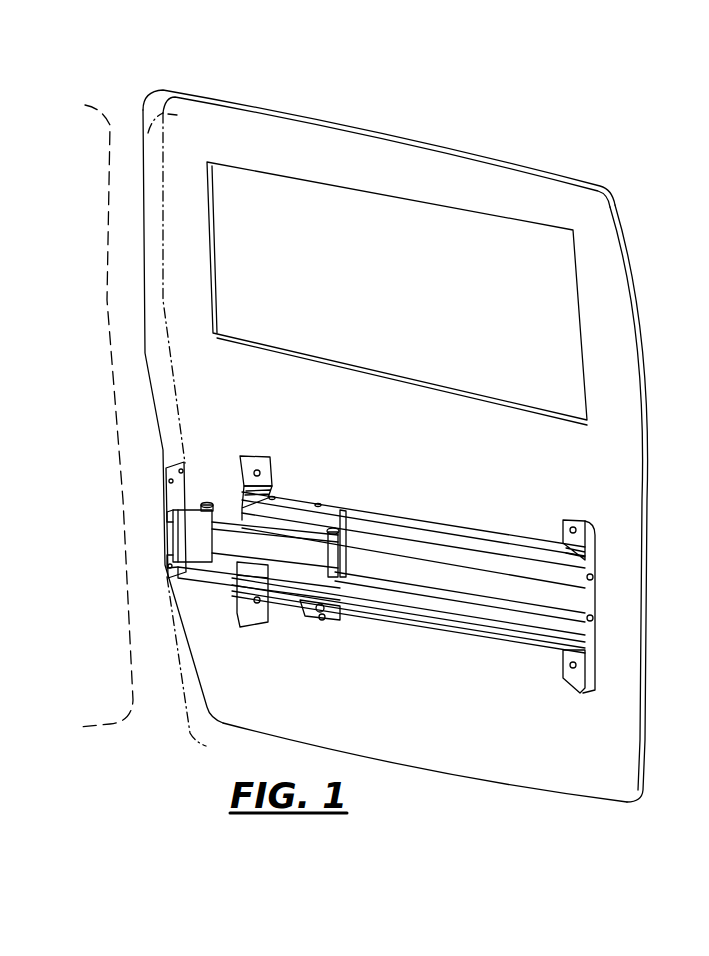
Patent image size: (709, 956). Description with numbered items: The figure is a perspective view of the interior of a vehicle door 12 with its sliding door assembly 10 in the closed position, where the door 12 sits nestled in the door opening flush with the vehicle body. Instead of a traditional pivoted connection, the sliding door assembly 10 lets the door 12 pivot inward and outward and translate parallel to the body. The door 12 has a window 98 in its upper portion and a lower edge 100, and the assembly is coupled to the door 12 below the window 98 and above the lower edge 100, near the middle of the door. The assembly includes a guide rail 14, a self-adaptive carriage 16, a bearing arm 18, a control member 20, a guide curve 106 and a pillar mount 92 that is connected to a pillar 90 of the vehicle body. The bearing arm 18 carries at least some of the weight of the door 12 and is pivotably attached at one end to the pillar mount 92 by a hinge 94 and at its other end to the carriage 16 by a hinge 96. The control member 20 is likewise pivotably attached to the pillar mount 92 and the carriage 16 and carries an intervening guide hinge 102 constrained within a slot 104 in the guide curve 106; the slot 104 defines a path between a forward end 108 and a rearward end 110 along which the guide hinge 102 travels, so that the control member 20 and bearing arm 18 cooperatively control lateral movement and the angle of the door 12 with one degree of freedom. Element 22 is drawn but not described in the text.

The sliding door assembly 10 is at (244, 428).
The vehicle door 12 is at (438, 147).
The guide rail 14 is at (470, 529).
The adaptive carriage 16 is at (294, 491).
The bearing arm 18 is at (270, 547).
The control member 20 is at (222, 577).
The door outer panel 22 is at (625, 750).
The pillar 90 is at (170, 435).
The pillar mount 92 is at (188, 538).
The hinge 94 is at (218, 505).
The hinge 96 is at (345, 535).
The window 98 is at (393, 312).
The lower edge 100 is at (408, 762).
The guide hinge 102 is at (330, 605).
The slot 104 is at (388, 617).
The guide curve 106 is at (463, 627).
The forward end 108 is at (513, 630).
The rearward end 110 is at (303, 615).